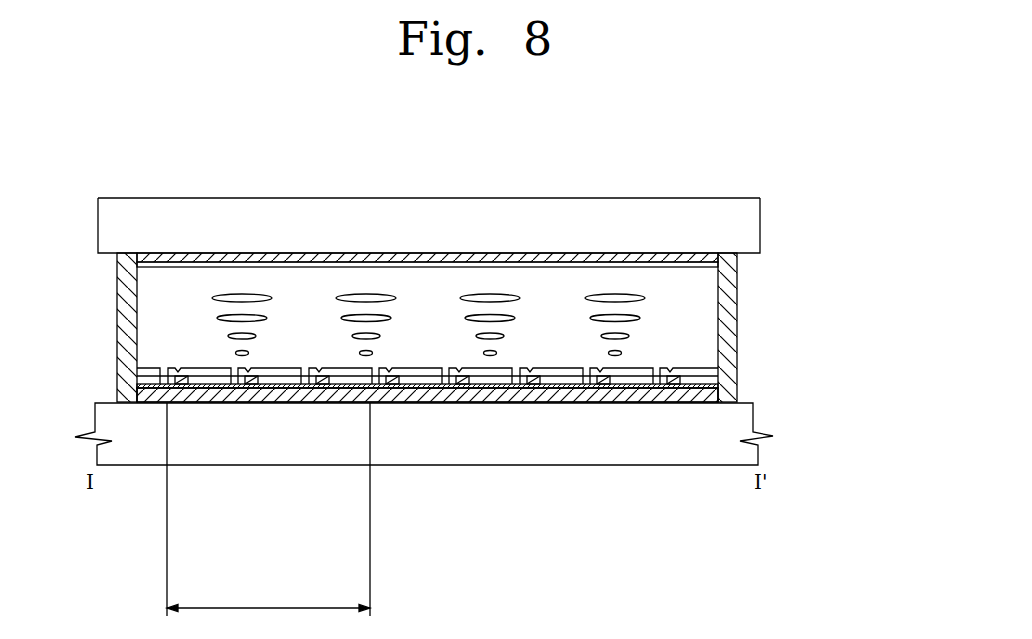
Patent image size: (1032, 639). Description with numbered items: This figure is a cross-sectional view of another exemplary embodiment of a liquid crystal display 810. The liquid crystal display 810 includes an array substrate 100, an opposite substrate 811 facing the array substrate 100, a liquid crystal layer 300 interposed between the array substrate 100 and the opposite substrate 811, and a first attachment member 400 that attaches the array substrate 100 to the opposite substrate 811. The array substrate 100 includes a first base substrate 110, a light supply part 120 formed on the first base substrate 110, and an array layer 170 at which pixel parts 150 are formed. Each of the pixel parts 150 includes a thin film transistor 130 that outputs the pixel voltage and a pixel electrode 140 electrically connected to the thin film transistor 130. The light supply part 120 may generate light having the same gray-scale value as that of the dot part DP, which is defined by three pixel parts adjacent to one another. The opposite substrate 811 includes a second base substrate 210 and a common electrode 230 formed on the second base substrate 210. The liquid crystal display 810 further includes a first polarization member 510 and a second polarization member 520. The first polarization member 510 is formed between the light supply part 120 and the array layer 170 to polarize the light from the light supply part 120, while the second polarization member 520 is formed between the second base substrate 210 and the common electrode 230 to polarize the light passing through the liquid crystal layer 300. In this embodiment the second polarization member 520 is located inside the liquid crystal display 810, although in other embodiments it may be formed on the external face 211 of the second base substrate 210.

The liquid crystal display 810 is at (692, 108).
The opposite substrate 811 is at (853, 215).
The second base substrate 210 is at (752, 223).
The external face 211 is at (590, 198).
The second polarization member 520 is at (419, 256).
The common electrode 230 is at (678, 268).
The first attachment member 400 is at (118, 328).
The liquid crystal layer 300 is at (148, 299).
The array substrate 100 is at (853, 350).
The array layer 170 is at (737, 383).
The pixel parts 150 is at (322, 532).
The pixel electrode 140 is at (288, 370).
The thin film transistor 130 is at (250, 390).
The light supply part 120 is at (737, 396).
The first polarization member 510 is at (433, 396).
The first base substrate 110 is at (753, 422).
The dot part DP is at (268, 509).